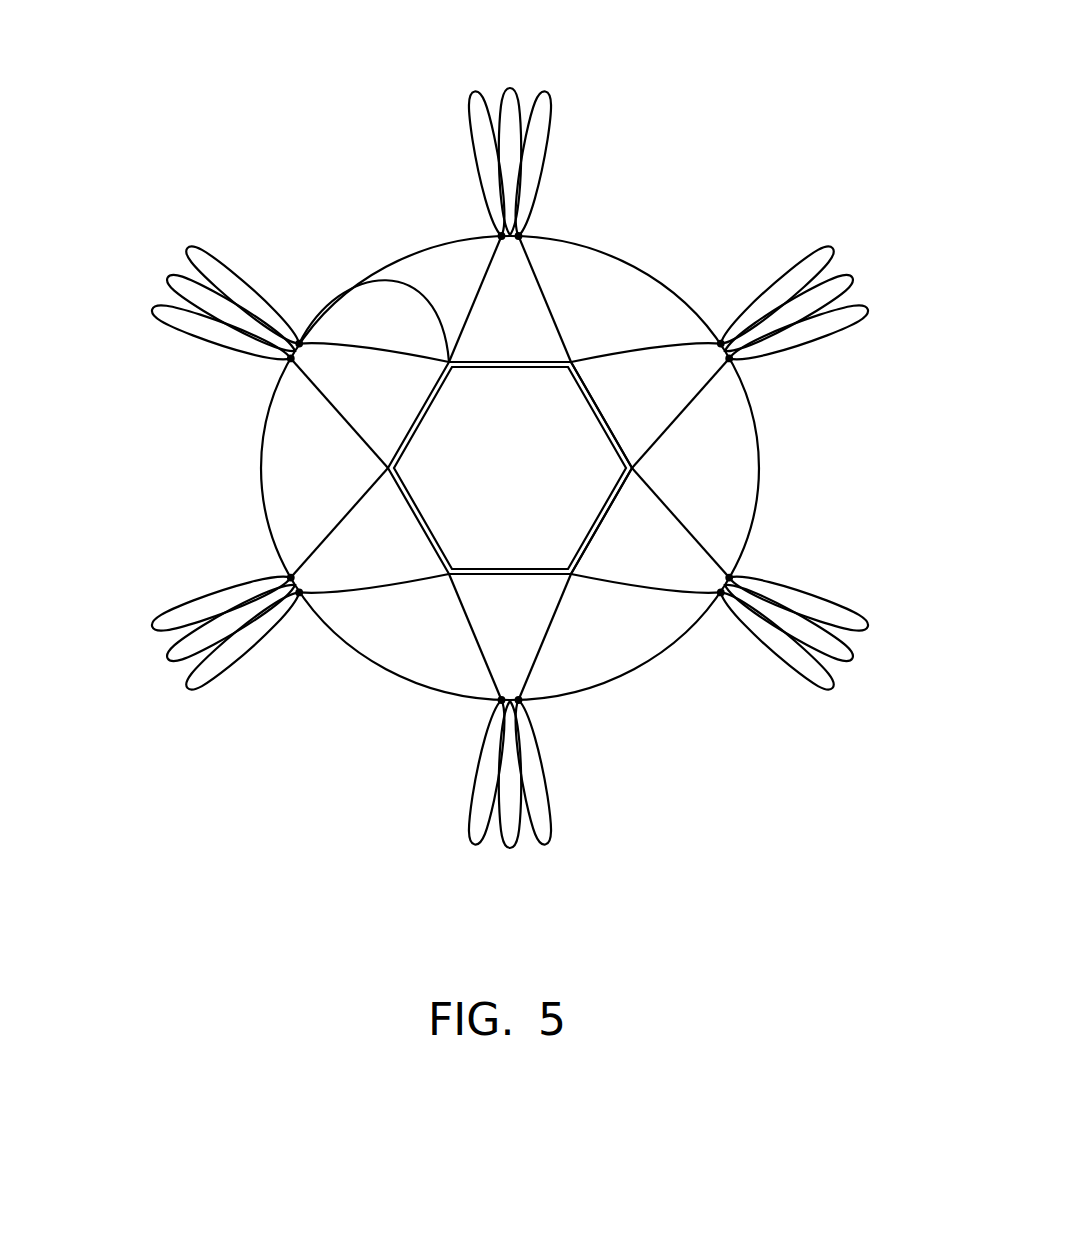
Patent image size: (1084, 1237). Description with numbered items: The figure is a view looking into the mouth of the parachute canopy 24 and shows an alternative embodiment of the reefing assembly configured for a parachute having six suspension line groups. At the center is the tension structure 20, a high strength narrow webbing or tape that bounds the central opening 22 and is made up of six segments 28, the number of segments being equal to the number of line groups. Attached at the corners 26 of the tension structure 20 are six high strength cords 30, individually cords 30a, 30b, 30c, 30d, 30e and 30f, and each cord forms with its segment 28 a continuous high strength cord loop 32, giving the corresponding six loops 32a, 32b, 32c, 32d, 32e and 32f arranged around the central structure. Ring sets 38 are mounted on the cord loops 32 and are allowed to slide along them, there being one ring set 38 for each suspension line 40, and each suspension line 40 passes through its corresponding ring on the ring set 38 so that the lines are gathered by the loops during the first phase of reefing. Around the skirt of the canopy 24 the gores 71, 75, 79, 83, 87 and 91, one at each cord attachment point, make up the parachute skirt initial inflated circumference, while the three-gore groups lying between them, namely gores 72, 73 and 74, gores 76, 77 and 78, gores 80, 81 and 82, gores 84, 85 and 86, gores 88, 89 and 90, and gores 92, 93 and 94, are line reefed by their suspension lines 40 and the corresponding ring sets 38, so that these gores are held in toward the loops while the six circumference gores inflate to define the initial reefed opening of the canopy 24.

The central tension structure 20 is at (622, 438).
The central opening 22 is at (442, 489).
The parachute canopy 24 is at (523, 449).
The corners 26 is at (378, 277).
The segment 28 is at (587, 383).
The high strength cords 30 is at (536, 451).
The high strength cord 30a is at (578, 352).
The high strength cord 30b is at (677, 422).
The high strength cord 30c is at (690, 522).
The high strength cord 30d is at (462, 646).
The high strength cord 30e is at (345, 515).
The high strength cord 30f is at (345, 425).
The high strength cord loops 32 is at (494, 445).
The high strength cord loop 32a is at (543, 277).
The high strength cord loop 32b is at (668, 347).
The high strength cord loop 32c is at (700, 538).
The high strength cord loop 32d is at (540, 664).
The high strength cord loop 32e is at (378, 592).
The high strength cord loop 32f is at (325, 407).
The ring set 38 is at (726, 336).
The suspension line 40 is at (505, 469).
The gore 71 is at (415, 252).
The gore 72 is at (471, 82).
The gore 73 is at (507, 79).
The gore 74 is at (548, 84).
The gore 75 is at (560, 322).
The gore 76 is at (839, 240).
The gore 77 is at (862, 270).
The gore 78 is at (879, 307).
The gore 79 is at (749, 405).
The gore 80 is at (873, 619).
The gore 81 is at (862, 661).
The gore 82 is at (842, 691).
The gore 83 is at (663, 657).
The gore 84 is at (550, 856).
The gore 85 is at (508, 862).
The gore 86 is at (471, 855).
The gore 87 is at (385, 675).
The gore 88 is at (177, 694).
The gore 89 is at (158, 659).
The gore 90 is at (144, 622).
The gore 91 is at (262, 508).
The gore 92 is at (140, 311).
The gore 93 is at (156, 271).
The gore 94 is at (178, 244).